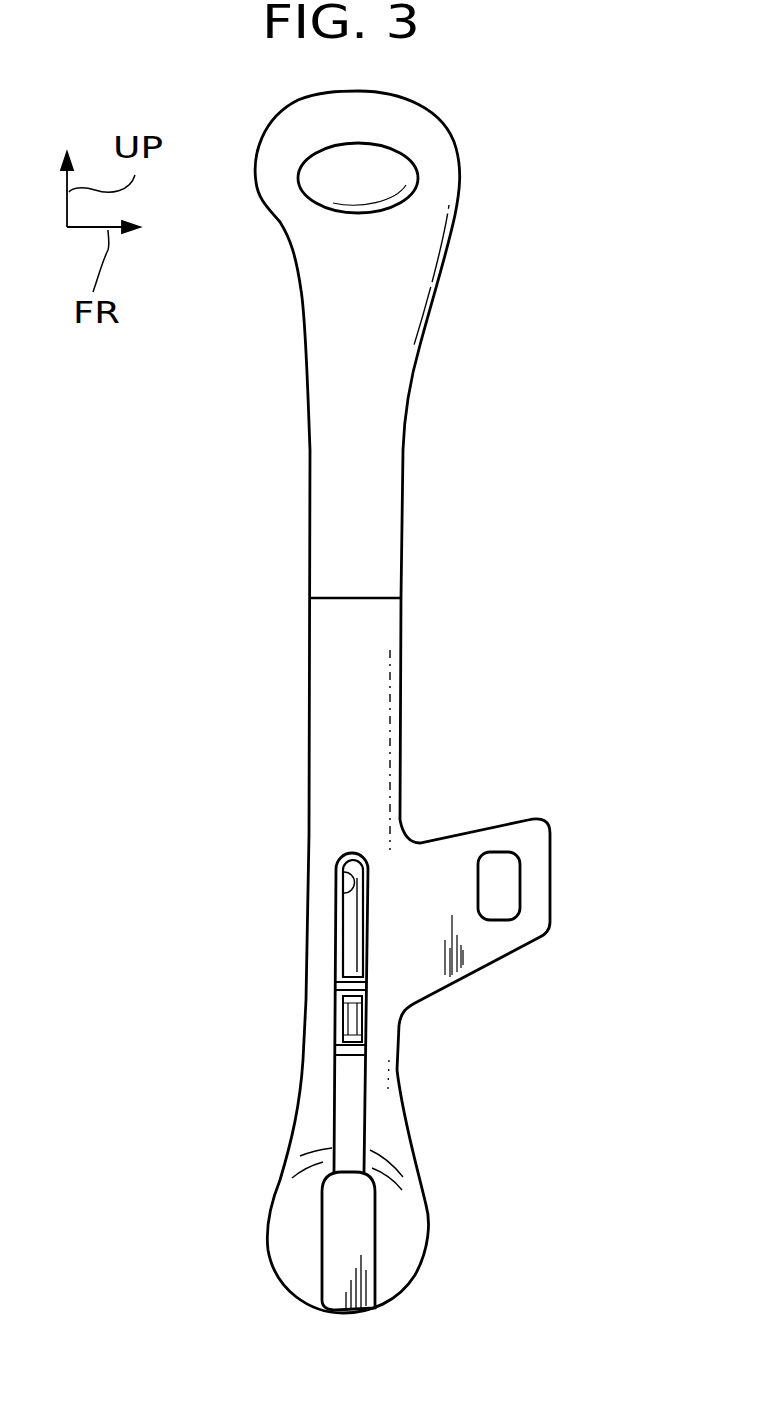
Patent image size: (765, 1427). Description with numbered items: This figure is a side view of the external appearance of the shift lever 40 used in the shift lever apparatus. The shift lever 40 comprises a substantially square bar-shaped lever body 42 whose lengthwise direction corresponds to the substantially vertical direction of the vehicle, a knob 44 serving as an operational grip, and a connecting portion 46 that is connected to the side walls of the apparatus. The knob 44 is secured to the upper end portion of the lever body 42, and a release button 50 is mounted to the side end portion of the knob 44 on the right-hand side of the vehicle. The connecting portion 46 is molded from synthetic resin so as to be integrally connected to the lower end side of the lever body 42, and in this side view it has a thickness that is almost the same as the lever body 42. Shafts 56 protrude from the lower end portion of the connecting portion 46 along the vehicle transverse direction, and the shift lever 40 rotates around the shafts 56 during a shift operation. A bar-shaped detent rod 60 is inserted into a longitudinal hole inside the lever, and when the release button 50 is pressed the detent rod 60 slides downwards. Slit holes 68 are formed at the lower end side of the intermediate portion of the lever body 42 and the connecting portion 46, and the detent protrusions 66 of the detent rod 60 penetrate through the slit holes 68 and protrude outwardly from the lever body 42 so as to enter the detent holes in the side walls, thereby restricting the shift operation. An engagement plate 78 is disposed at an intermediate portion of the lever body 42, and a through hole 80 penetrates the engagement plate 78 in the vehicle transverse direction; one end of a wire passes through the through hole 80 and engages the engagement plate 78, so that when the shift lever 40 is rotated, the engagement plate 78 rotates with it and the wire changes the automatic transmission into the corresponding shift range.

The shift lever 40 is at (455, 558).
The lever body 42 is at (400, 665).
The knob 44 is at (433, 318).
The connecting portion 46 is at (430, 1252).
The release button 50 is at (347, 185).
The shaft 56 is at (333, 1230).
The detent rod 60 is at (340, 937).
The detent protrusion 66 is at (345, 1018).
The slit hole 68 is at (342, 868).
The engagement plate 78 is at (473, 832).
The through hole 80 is at (510, 868).